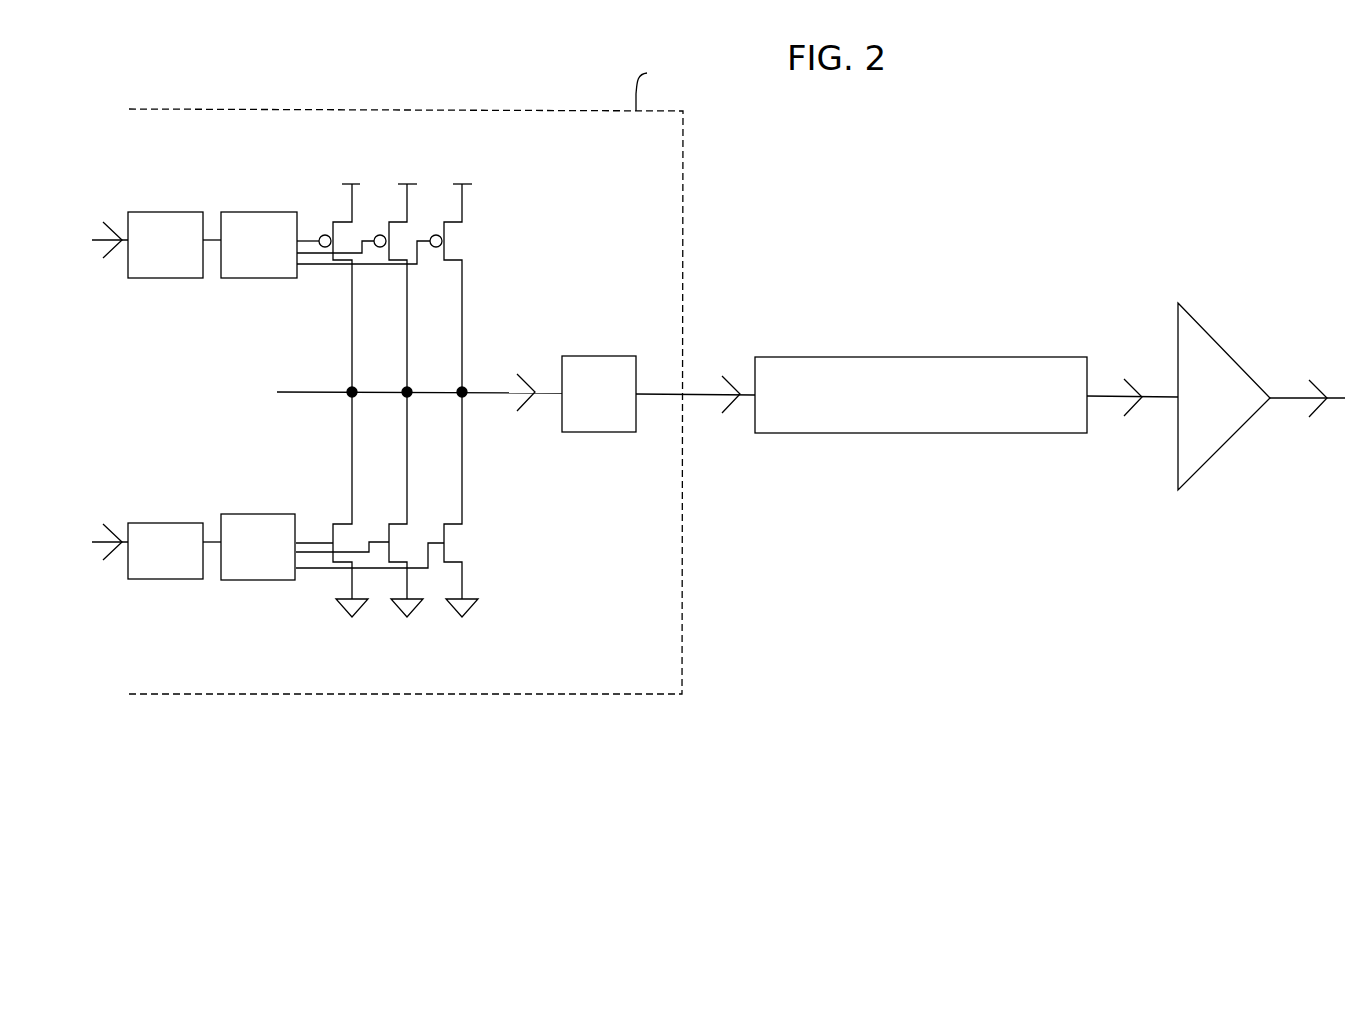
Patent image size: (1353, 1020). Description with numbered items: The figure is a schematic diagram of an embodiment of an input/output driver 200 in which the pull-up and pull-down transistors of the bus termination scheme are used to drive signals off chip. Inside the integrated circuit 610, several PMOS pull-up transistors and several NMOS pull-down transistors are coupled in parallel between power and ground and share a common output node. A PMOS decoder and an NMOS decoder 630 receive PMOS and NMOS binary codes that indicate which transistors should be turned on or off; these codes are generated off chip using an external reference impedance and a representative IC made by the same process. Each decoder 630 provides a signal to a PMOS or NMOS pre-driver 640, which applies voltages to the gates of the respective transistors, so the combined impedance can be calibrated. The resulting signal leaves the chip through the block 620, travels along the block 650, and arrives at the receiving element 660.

The output driver system 200 is at (862, 808).
The integrated circuit 610 is at (357, 109).
The package 620 is at (590, 356).
The decoder 630 is at (147, 212).
The pre-driver 640 is at (250, 212).
The transmission line 650 is at (822, 433).
The receiver 660 is at (1222, 446).